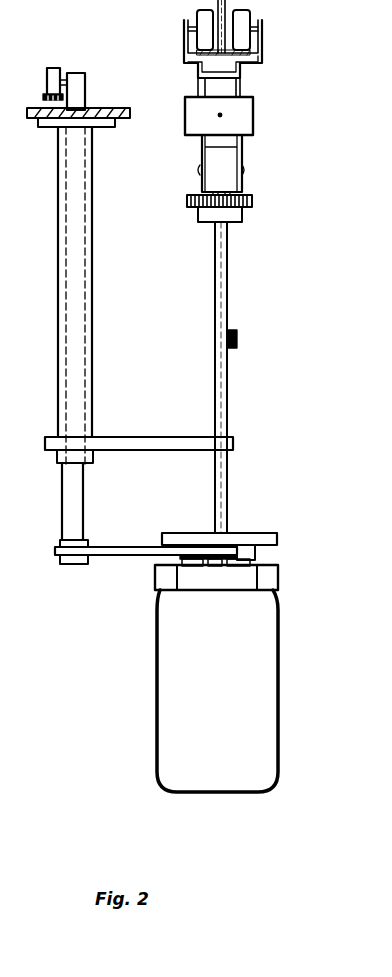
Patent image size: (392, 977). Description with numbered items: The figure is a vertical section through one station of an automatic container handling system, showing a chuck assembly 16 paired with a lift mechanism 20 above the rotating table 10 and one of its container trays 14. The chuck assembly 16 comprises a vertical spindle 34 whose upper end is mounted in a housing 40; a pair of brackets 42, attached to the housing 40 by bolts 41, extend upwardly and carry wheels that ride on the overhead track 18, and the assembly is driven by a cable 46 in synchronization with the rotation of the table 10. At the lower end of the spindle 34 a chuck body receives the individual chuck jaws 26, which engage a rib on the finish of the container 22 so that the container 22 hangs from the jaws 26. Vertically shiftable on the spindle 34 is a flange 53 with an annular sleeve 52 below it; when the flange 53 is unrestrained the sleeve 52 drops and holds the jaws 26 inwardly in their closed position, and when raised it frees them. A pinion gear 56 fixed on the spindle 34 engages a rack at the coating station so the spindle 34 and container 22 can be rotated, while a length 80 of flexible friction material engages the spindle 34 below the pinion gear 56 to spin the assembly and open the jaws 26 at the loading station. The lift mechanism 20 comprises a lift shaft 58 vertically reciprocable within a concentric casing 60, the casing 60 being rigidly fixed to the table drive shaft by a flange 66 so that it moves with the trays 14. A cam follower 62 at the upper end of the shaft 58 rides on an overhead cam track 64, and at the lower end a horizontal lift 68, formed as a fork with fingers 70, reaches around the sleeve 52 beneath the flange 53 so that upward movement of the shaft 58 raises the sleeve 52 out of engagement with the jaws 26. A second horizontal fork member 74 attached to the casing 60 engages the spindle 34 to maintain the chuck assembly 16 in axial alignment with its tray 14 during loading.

The rotating table 10 is at (0, 873).
The container tray 14 is at (11, 842).
The chuck assembly 16 is at (135, 593).
The overhead track 18 is at (263, 63).
The lift mechanism 20 is at (112, 402).
The container 22 is at (217, 691).
The chuck jaws 26 is at (235, 580).
The spindle 34 is at (228, 396).
The housing 40 is at (203, 182).
The bolts 41 is at (243, 178).
The brackets 42 is at (186, 66).
The cable 46 is at (222, 115).
The annular sleeve 52 is at (257, 557).
The flange 53 is at (280, 532).
The pinion gear 56 is at (250, 203).
The lift shaft 58 is at (87, 166).
The casing 60 is at (93, 315).
The cam follower 62 is at (62, 66).
The cam track 64 is at (43, 97).
The flange 66 is at (120, 123).
The lift 68 is at (120, 556).
The fingers 70 is at (238, 548).
The second horizontal member 74 is at (167, 447).
The length of flexible friction material 80 is at (238, 340).